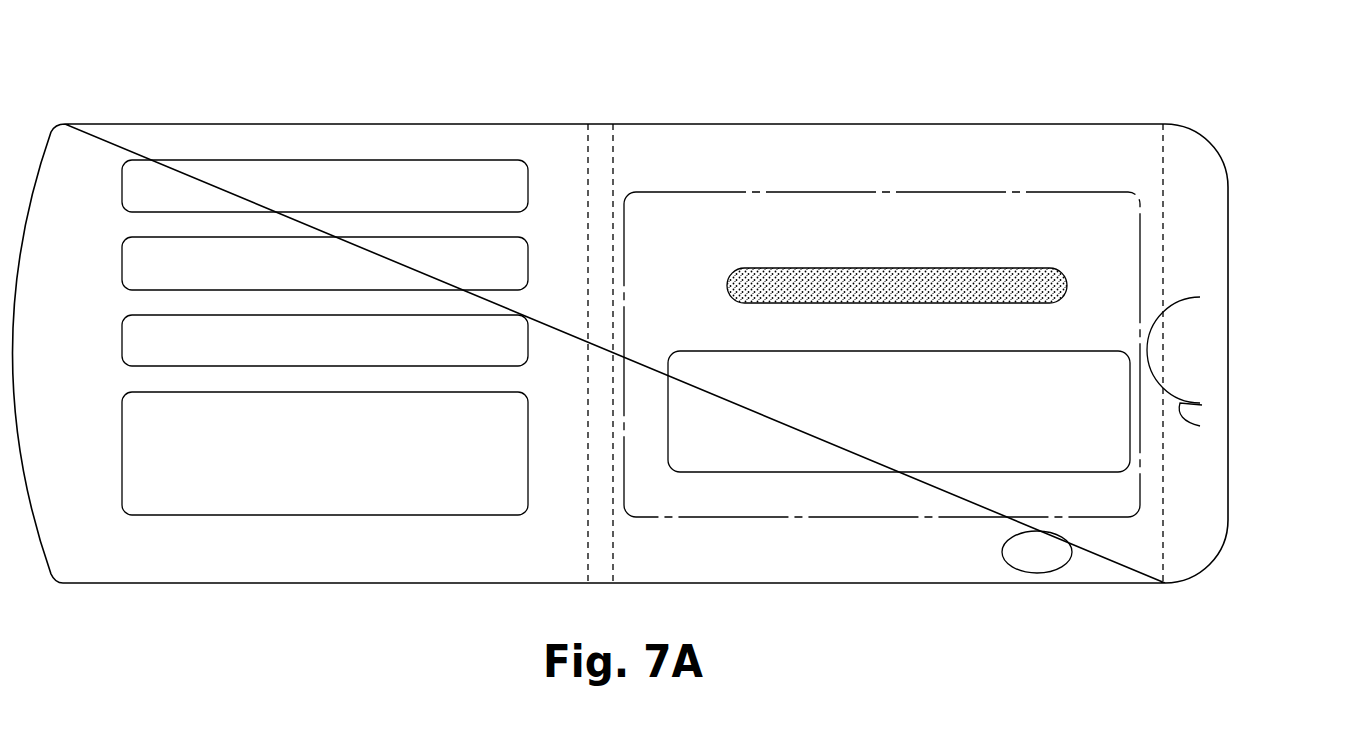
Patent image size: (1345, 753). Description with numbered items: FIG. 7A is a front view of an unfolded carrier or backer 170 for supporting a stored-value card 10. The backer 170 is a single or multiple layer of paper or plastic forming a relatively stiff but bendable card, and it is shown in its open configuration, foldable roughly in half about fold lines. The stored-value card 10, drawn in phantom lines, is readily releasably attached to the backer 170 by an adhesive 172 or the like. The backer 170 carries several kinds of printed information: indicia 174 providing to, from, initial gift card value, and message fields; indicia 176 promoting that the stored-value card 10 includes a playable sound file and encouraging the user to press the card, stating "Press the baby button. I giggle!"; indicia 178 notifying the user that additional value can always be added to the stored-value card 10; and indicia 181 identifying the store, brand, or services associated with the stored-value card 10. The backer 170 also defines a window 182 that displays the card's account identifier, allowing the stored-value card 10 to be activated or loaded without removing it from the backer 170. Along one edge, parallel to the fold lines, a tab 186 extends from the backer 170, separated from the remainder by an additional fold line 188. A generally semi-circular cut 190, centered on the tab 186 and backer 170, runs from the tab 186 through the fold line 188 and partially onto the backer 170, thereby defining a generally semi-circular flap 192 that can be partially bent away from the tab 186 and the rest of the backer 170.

The stored-value card 10 is at (1120, 228).
The backer 170 is at (1112, 73).
The adhesive 172 is at (1055, 285).
The indicia 174 is at (377, 145).
The indicia 176 is at (884, 132).
The indicia 178 is at (118, 575).
The indicia 181 is at (1010, 566).
The window 182 is at (1127, 447).
The tab 186 is at (1195, 506).
The fold line 188 is at (1163, 553).
The semi-circular cut 190 is at (1200, 426).
The semi-circular flap 192 is at (1160, 353).